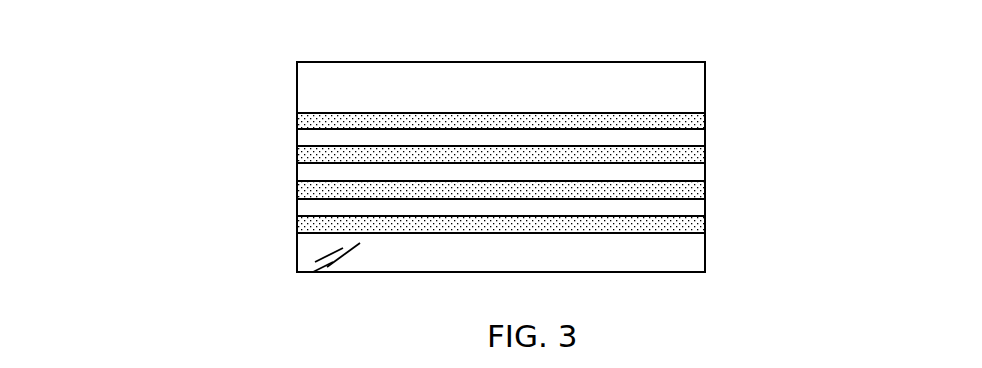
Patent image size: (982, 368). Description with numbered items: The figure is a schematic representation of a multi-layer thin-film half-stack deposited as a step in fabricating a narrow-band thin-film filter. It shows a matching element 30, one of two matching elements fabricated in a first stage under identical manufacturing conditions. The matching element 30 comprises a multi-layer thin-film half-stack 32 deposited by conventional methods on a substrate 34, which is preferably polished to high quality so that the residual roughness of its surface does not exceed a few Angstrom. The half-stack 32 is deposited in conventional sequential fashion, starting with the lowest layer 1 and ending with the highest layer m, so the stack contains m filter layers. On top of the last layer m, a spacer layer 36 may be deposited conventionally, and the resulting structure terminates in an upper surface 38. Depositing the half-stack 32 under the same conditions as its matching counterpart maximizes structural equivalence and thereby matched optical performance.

The matching element 30 is at (165, 62).
The multi-layer thin-film half-stack 32 is at (270, 62).
The substrate 34 is at (692, 255).
The spacer layer 36 is at (677, 88).
The terminating upper surface 38 is at (612, 62).
The highest layer m is at (693, 123).
The lowest layer 1 is at (692, 225).